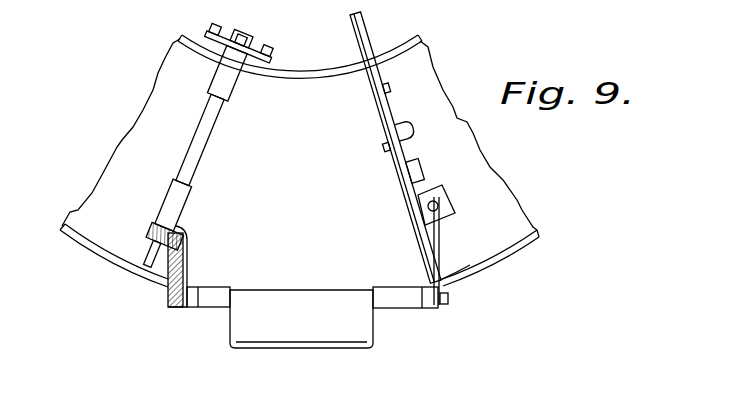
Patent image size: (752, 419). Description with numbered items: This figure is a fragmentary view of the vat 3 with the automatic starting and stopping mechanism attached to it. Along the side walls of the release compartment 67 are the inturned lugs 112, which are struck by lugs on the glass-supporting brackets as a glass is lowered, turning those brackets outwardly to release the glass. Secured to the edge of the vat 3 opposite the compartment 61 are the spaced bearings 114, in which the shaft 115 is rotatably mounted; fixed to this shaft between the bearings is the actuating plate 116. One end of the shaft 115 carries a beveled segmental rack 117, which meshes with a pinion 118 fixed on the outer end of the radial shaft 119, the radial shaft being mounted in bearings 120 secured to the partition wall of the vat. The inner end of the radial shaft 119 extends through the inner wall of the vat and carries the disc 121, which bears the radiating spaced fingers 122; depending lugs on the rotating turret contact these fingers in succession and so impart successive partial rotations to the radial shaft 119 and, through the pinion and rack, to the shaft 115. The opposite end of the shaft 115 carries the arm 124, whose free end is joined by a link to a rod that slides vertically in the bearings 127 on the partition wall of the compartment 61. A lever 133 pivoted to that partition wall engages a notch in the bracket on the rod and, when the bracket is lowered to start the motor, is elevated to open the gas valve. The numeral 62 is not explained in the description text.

The vat 3 is at (83, 248).
The compartment 61 is at (443, 272).
The lower edge 62 is at (140, 265).
The compartment 67 is at (500, 233).
The inturned lug 112 is at (418, 140).
The bearing 114 is at (214, 288).
The shaft 115 is at (447, 299).
The actuating plate 116 is at (288, 338).
The beveled segmental rack 117 is at (184, 270).
The pinion 118 is at (152, 232).
The radial shaft 119 is at (203, 151).
The bearing 120 is at (216, 81).
The disc 121 is at (248, 50).
The radiating spaced finger 122 is at (252, 9).
The arm 124 is at (434, 243).
The bearing 127 is at (485, 209).
The lever 133 is at (427, 116).